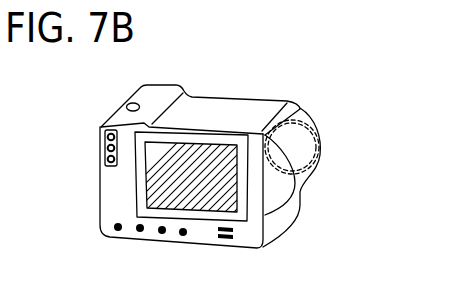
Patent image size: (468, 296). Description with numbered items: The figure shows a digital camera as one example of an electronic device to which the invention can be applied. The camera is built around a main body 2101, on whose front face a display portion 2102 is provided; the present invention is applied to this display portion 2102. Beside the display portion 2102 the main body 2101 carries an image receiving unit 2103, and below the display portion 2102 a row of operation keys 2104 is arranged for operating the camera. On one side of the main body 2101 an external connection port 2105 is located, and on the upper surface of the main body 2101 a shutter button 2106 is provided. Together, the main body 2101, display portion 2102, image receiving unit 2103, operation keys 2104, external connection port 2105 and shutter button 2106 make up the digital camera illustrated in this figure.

The main body 2101 is at (183, 107).
The display portion 2102 is at (245, 221).
The image receiving unit 2103 is at (295, 124).
The operation keys 2104 is at (117, 228).
The external connection port 2105 is at (103, 168).
The shutter button 2106 is at (134, 106).